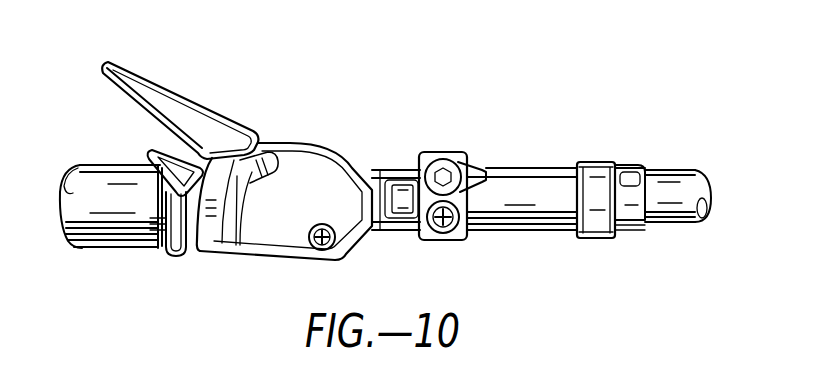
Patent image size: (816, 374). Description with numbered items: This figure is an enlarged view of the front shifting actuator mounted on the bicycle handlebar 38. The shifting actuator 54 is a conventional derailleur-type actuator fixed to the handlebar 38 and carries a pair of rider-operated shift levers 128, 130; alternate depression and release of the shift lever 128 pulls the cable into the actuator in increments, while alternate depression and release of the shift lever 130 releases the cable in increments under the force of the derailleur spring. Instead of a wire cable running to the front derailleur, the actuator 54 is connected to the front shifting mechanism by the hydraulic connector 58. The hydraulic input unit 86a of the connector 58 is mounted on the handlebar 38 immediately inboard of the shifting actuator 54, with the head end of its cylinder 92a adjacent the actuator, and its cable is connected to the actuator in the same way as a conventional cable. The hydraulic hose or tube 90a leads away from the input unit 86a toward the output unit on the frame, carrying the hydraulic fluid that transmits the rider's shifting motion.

The shift lever 128 is at (142, 62).
The shift lever 130 is at (150, 146).
The shifting actuator 54 is at (299, 143).
The handlebar 38 is at (680, 171).
The hydraulic input unit 86a is at (516, 166).
The hydraulic hose or tube 90a is at (531, 192).
The cylinder 92a is at (492, 231).
The hydraulic connector 58 is at (623, 232).